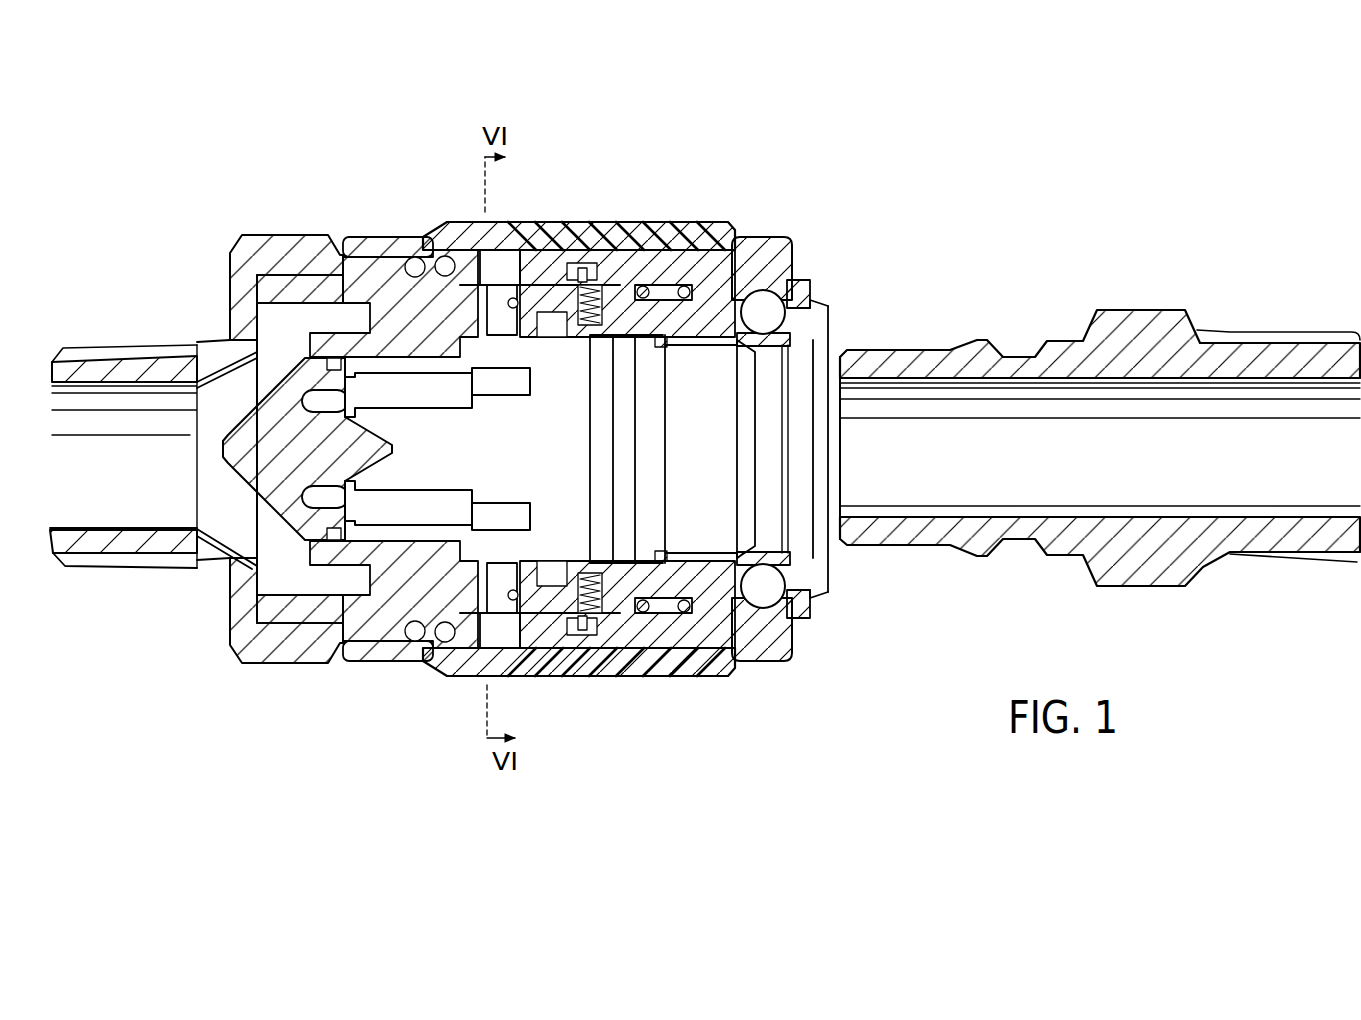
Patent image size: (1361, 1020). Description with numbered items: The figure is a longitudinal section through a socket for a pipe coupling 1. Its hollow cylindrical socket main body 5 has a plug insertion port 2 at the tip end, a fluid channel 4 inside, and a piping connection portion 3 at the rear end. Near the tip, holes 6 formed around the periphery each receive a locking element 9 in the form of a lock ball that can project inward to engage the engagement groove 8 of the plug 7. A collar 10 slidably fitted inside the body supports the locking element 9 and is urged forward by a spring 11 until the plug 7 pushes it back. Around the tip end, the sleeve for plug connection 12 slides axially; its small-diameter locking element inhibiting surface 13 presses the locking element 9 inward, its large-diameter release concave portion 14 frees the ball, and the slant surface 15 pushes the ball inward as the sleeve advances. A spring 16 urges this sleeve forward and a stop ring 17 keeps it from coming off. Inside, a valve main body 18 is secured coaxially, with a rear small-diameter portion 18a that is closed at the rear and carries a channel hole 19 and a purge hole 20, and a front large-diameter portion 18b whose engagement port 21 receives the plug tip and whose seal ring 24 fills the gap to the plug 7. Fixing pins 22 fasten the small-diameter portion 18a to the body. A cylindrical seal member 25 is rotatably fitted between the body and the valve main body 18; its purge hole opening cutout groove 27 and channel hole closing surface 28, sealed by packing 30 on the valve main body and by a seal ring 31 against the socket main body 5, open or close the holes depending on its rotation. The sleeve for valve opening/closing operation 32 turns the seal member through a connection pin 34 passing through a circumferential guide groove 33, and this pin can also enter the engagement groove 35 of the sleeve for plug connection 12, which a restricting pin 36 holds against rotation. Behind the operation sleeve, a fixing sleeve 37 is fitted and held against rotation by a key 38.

The socket for a pipe coupling 1 is at (318, 205).
The plug insertion port 2 is at (802, 372).
The piping connection portion 3 is at (280, 250).
The fluid channel 4 is at (288, 328).
The socket main body 5 is at (395, 290).
The holes 6 is at (820, 318).
The plug 7 is at (1128, 298).
The engagement groove 8 is at (1013, 345).
The locking element 9 is at (797, 292).
The collar 10 is at (828, 578).
The spring 11 is at (790, 628).
The sleeve for plug connection 12 is at (727, 236).
The locking element inhibiting surface 13 is at (740, 236).
The release concave portion 14 is at (800, 236).
The slant surface 15 is at (772, 236).
The spring 16 is at (695, 236).
The stop ring 17 is at (828, 302).
The valve main body 18 is at (275, 482).
The small-diameter portion 18a is at (402, 582).
The large-diameter portion 18b is at (645, 600).
The channel hole 19 is at (335, 578).
The purge hole 20 is at (470, 580).
The engagement port 21 is at (658, 492).
The fixing pins 22 is at (640, 236).
The seal ring 24 is at (680, 664).
The cylindrical seal member 25 is at (382, 525).
The purge hole opening cutout groove 27 is at (557, 236).
The channel hole closing surface 28 is at (352, 592).
The packing 30 is at (312, 548).
The seal ring 31 is at (435, 520).
The sleeve for valve opening/closing operation 32 is at (677, 236).
The guide groove 33 is at (537, 236).
The connection pin 34 is at (533, 236).
The engagement groove 35 is at (580, 236).
The restricting pin 36 is at (622, 236).
The fixing sleeve 37 is at (447, 218).
The key 38 is at (413, 236).